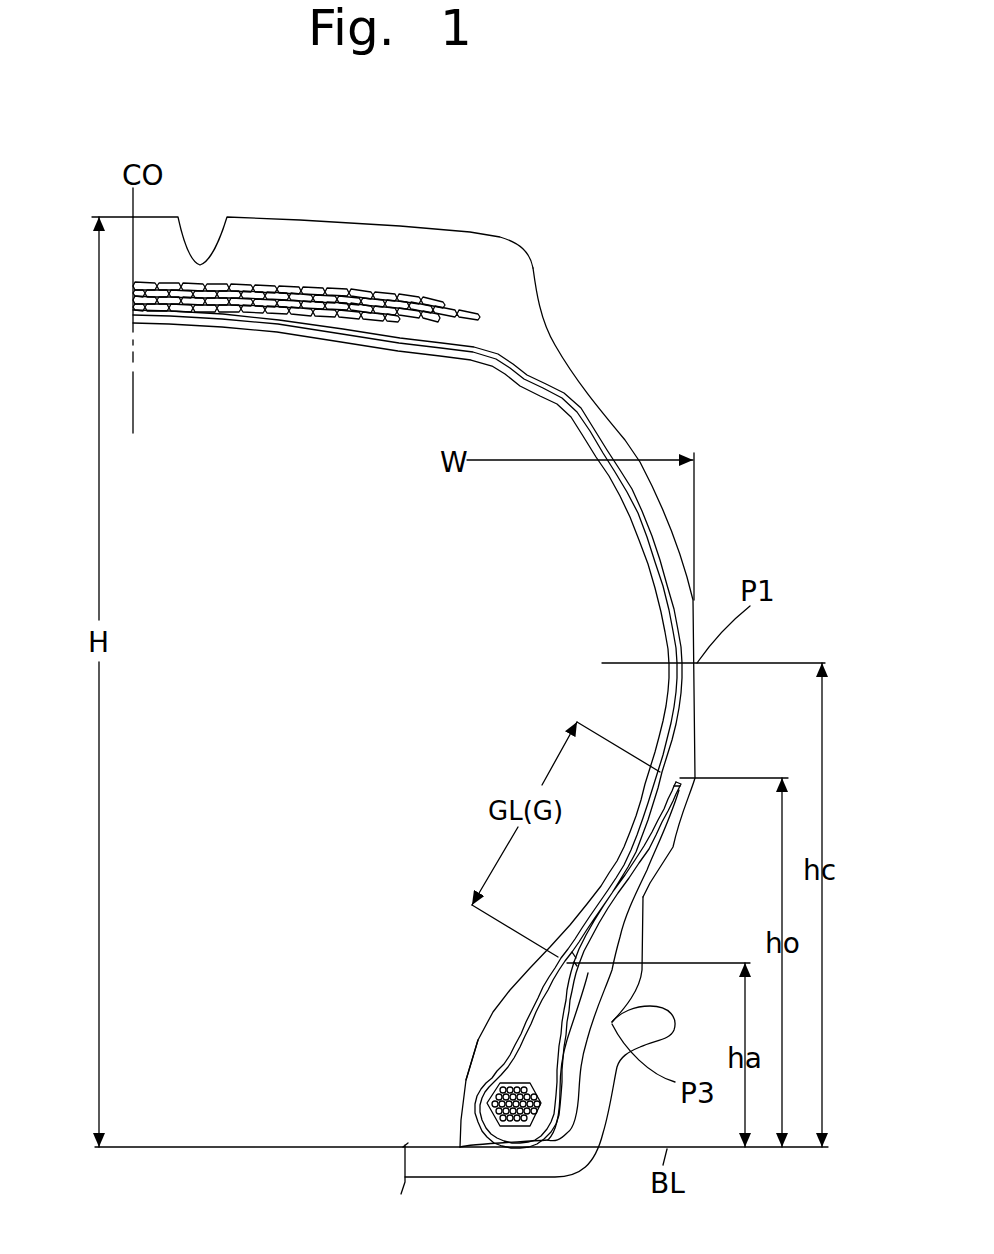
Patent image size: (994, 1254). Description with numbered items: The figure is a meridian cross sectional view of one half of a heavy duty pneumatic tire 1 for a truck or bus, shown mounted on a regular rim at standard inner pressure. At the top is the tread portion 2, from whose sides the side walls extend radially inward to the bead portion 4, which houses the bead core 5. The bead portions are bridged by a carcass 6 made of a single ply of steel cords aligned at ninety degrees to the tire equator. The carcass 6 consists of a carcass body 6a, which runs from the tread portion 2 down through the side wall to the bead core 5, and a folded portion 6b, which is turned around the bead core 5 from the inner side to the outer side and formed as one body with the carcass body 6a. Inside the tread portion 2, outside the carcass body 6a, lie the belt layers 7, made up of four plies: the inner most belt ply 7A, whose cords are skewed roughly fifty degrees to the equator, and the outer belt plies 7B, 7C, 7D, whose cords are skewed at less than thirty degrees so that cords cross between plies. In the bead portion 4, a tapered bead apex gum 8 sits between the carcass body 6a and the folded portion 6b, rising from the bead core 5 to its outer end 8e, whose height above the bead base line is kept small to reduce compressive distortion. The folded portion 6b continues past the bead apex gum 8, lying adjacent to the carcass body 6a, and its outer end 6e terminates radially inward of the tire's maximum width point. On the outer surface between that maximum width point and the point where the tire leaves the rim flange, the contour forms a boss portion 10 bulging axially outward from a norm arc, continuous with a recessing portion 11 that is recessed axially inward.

The pneumatic tire 1 is at (735, 328).
The tread portion 2 is at (385, 196).
The bead portion 4 is at (463, 950).
The bead core 5 is at (497, 1100).
The carcass 6 is at (407, 729).
The carcass body 6a is at (672, 606).
The folded portion 6b is at (548, 1020).
The outer end of the folded portion 6e is at (681, 793).
The belt layers 7 is at (306, 350).
The inner most belt ply 7A is at (300, 375).
The outer belt ply 7B is at (208, 301).
The outer belt ply 7C is at (243, 294).
The outer belt ply 7D is at (268, 284).
The bead apex gum 8 is at (513, 1063).
The outer end of the bead apex gum 8e is at (560, 955).
The boss portion 10 is at (697, 748).
The recessing portion 11 is at (646, 899).